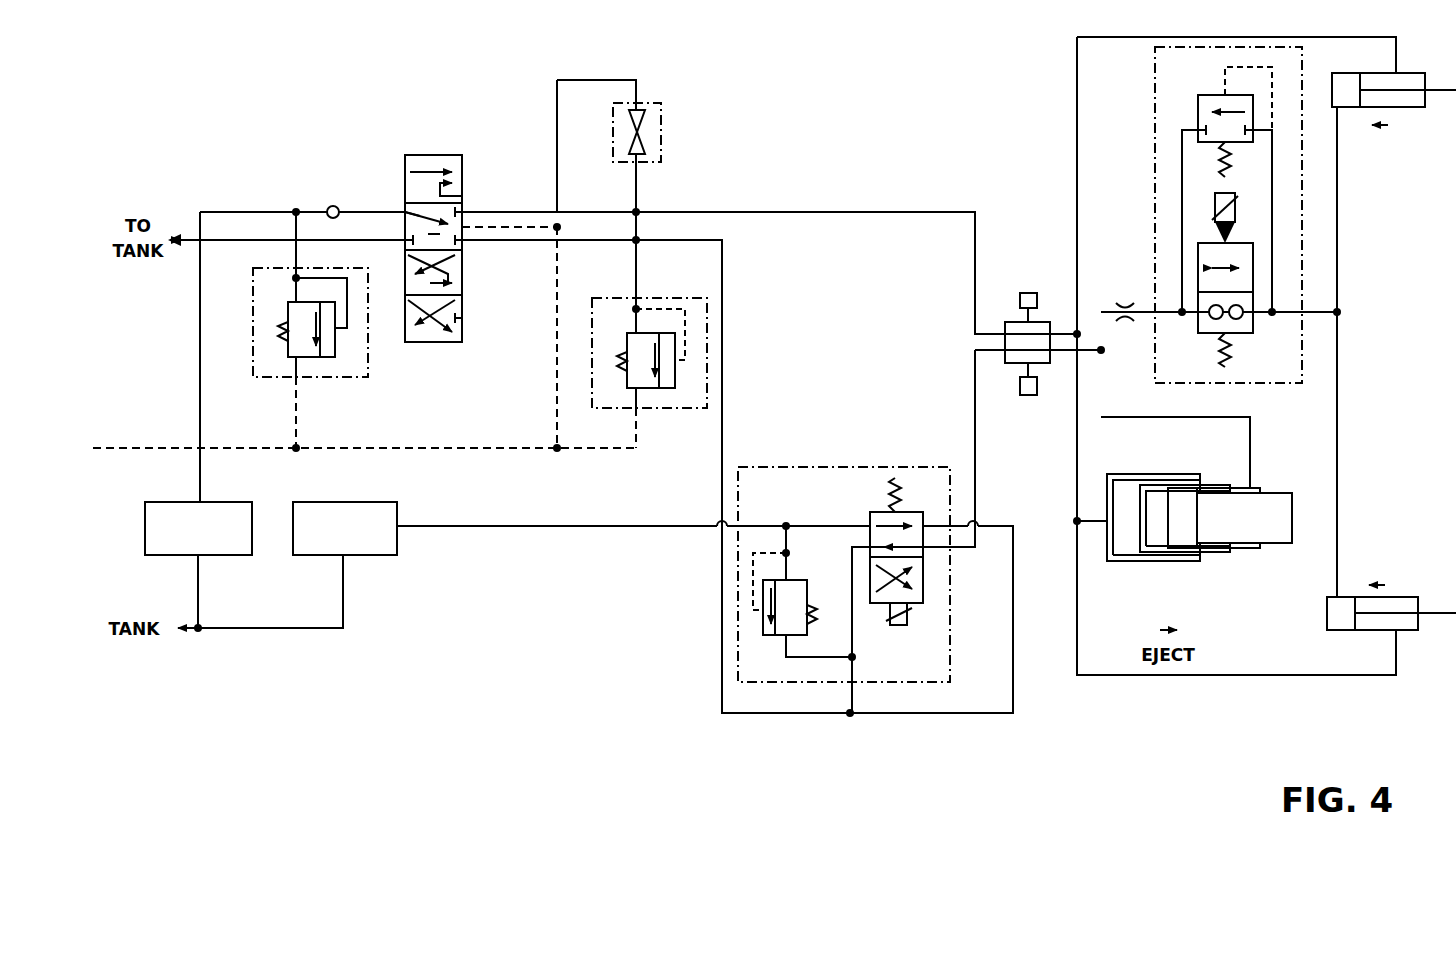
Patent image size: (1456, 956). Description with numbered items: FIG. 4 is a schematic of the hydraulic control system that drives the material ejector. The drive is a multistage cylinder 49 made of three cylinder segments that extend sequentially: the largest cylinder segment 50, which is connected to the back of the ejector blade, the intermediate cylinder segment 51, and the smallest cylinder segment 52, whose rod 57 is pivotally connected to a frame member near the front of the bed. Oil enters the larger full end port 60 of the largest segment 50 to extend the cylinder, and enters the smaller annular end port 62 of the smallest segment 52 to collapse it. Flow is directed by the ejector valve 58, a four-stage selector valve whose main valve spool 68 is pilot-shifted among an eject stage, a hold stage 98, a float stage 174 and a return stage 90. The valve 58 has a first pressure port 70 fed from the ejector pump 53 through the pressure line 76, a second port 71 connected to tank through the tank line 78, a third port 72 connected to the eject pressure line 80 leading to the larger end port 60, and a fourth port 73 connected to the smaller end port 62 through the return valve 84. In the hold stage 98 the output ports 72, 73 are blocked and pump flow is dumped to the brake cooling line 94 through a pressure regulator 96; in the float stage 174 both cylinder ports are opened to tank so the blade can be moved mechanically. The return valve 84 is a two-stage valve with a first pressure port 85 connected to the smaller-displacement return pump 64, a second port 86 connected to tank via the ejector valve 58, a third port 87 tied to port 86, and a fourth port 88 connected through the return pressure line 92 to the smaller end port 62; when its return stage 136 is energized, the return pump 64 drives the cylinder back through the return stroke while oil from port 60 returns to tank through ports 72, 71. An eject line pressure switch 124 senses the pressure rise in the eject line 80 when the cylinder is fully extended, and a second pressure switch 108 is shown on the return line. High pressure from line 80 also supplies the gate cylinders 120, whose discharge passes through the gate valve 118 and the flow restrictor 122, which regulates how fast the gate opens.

The multistage cylinder 49 is at (1199, 513).
The largest cylinder segment 50 is at (1158, 562).
The intermediate cylinder segment 51 is at (1222, 553).
The smallest cylinder segment 52 is at (1240, 488).
The ejector pump 53 is at (231, 502).
The rod 57 is at (1246, 536).
The ejector valve 58 is at (447, 217).
The larger end port 60 is at (1079, 523).
The smaller end port 62 is at (1254, 487).
The return pump 64 is at (369, 502).
The main valve spool 68 is at (454, 155).
The first pressure port 70 is at (405, 212).
The second port 71 is at (404, 242).
The third port 72 is at (467, 212).
The fourth port 73 is at (490, 242).
The pressure line 76 is at (258, 212).
The tank line 78 is at (264, 240).
The eject pressure line 80 is at (789, 212).
The return valve 84 is at (837, 467).
The first pressure port 85 is at (870, 526).
The second port 86 is at (860, 547).
The third port 87 is at (930, 525).
The fourth port 88 is at (926, 556).
The return stage 90 is at (436, 343).
The return pressure line 92 is at (975, 400).
The brake cooling line 94 is at (232, 448).
The pressure regulator 96 is at (321, 378).
The hold stage 98 is at (432, 234).
The return line pressure switch 108 is at (1038, 483).
The gate valve 118 is at (1188, 385).
The gate cylinders 120 is at (1373, 73).
The flow restrictor 122 is at (1132, 306).
The eject line pressure switch 124 is at (1036, 218).
The return stage 136 is at (882, 599).
The float stage 174 is at (434, 283).